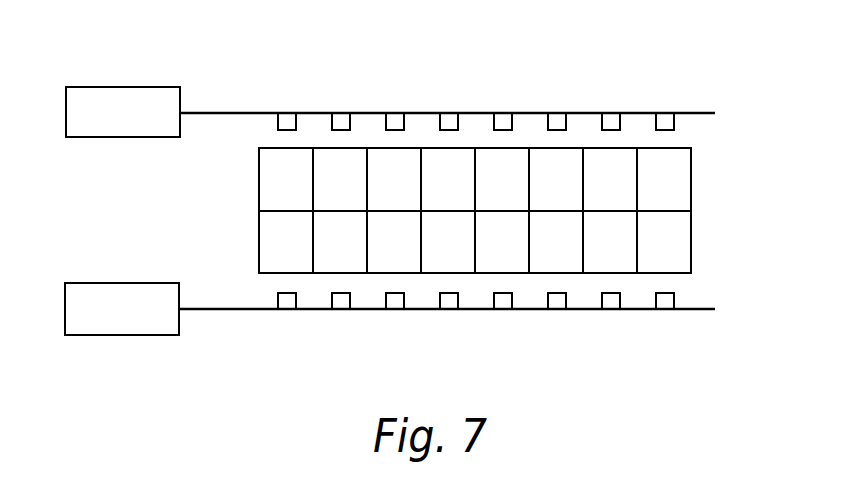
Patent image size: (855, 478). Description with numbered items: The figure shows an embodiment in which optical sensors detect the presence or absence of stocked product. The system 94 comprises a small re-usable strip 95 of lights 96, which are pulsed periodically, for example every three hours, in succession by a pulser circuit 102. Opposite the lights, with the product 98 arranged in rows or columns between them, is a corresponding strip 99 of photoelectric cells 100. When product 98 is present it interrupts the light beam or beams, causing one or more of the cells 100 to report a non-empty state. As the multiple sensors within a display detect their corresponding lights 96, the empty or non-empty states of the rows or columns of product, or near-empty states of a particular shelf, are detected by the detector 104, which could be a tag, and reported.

The system 94 is at (80, 65).
The strip of lights 95 is at (425, 112).
The lights 96 is at (277, 123).
The product 98 is at (259, 180).
The strip of photoelectric cells 99 is at (425, 311).
The photoelectric cells 100 is at (278, 298).
The pulser circuit 102 is at (123, 87).
The detector 104 is at (107, 283).